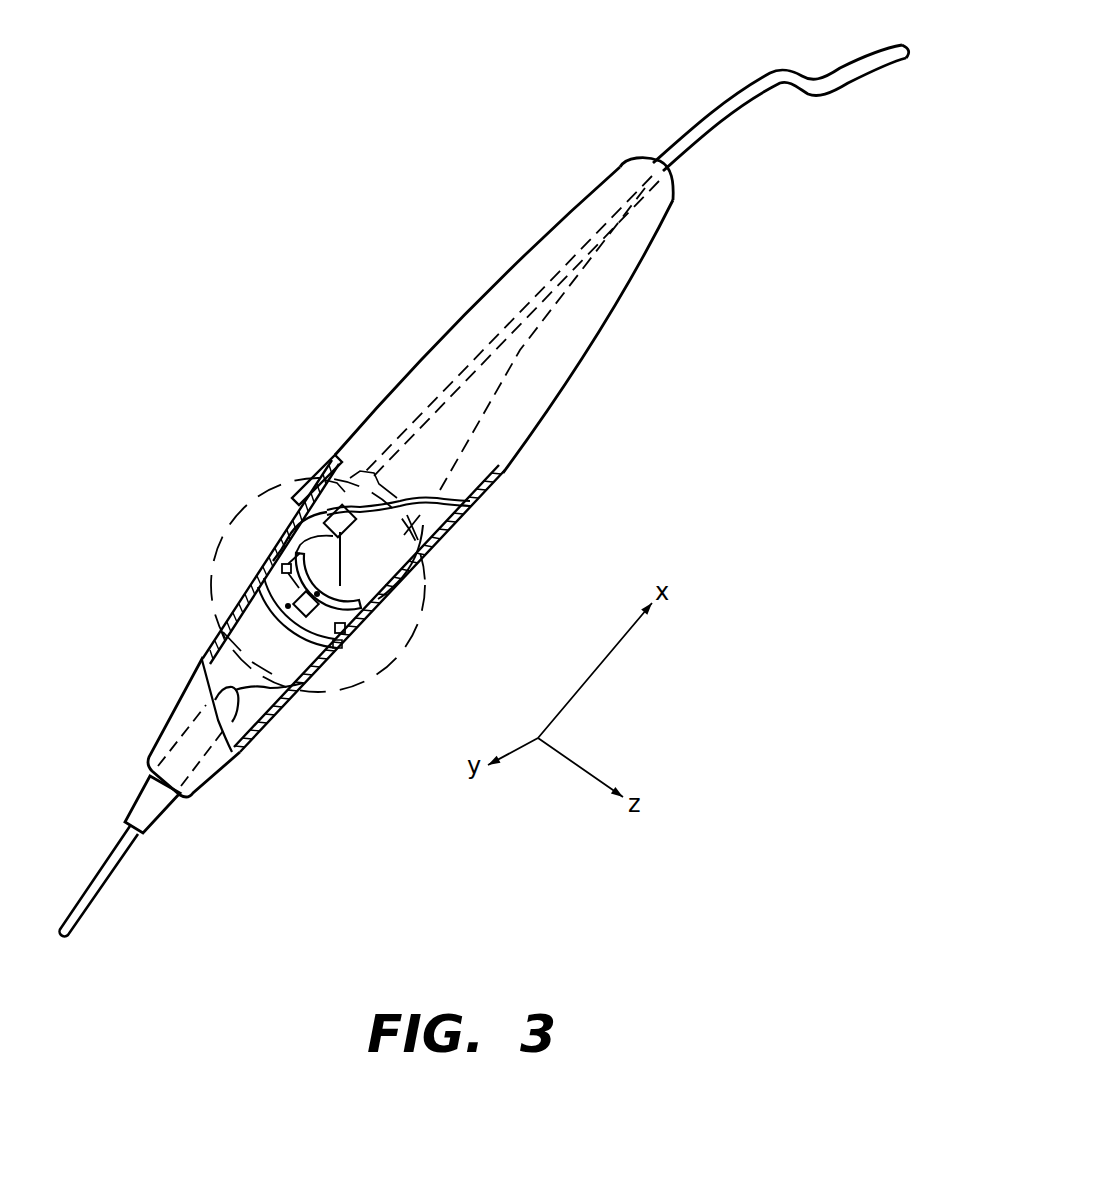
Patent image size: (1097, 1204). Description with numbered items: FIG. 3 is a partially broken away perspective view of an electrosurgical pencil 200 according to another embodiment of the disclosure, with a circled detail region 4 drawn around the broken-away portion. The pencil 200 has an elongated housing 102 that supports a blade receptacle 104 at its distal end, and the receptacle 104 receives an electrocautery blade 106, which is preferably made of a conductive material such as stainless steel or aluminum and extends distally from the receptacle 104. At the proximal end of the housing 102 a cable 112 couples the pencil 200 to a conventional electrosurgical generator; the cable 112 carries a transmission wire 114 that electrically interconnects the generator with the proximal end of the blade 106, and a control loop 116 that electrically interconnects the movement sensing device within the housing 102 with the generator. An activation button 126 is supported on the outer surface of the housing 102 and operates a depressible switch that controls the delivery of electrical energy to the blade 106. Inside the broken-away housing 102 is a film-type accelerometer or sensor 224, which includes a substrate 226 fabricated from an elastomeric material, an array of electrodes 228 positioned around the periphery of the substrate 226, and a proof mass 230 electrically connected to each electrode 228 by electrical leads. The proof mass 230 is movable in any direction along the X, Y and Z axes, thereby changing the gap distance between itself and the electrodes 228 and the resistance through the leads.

The electrosurgical pencil 200 is at (476, 490).
The detail region / sensor assembly area 4 is at (297, 470).
The elongated housing 102 is at (208, 629).
The blade receptacle 104 is at (136, 802).
The electrocautery blade 106 is at (98, 893).
The cable 112 is at (715, 119).
The transmission wire 114 is at (263, 688).
The control loop 116 is at (456, 383).
The activation button 126 is at (305, 470).
The film-type accelerometer or sensor 224 is at (355, 598).
The substrate 226 is at (338, 655).
The electrodes 228 is at (267, 562).
The proof mass 230 is at (273, 570).